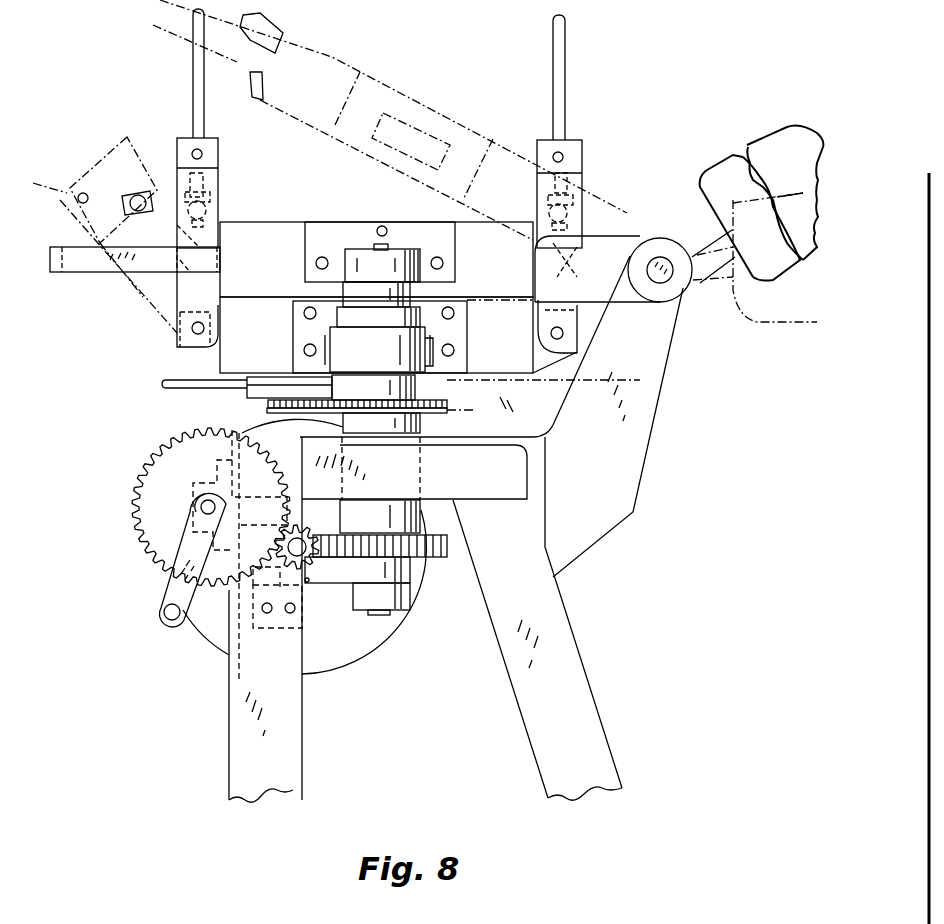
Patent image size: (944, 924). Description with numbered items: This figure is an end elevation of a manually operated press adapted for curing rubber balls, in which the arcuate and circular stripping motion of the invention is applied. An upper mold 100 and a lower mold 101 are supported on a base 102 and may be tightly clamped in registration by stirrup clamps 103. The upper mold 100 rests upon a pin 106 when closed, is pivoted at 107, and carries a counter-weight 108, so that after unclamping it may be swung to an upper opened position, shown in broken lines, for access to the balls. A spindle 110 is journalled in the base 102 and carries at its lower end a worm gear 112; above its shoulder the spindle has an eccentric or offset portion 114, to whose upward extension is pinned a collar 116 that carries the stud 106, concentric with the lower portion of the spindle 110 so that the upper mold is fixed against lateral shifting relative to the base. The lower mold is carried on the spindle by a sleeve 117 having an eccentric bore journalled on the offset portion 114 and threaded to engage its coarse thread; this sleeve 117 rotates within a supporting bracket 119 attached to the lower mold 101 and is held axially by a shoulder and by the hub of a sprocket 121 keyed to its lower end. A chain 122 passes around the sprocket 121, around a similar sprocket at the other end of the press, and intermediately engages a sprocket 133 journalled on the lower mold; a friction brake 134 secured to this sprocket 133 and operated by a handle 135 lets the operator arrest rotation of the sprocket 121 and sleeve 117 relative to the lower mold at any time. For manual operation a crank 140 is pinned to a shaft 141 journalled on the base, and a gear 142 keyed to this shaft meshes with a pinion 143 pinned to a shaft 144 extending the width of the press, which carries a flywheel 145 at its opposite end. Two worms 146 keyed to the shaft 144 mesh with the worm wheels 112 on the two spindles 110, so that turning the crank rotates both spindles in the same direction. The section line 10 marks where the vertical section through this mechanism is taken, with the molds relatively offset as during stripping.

The section line 10- 10 is at (380, 190).
The upper mold 100 is at (342, 67).
The lower mold 101 is at (430, 338).
The base 102 is at (456, 529).
The stirrup clamps 103 is at (177, 173).
The pin 106 is at (376, 247).
The pivot 107 is at (663, 288).
The counter-weight 108 is at (768, 145).
The spindle 110 is at (390, 615).
The worm gear 112 is at (418, 547).
The eccentric or offset portion 114 is at (375, 417).
The collar 116 is at (410, 292).
The sleeve 117 is at (358, 318).
The supporting bracket 119 is at (433, 340).
The sprocket 121 is at (433, 393).
The chain 122 is at (380, 400).
The sprocket 133 is at (270, 409).
The friction brake 134 is at (253, 388).
The handle 135 is at (187, 388).
The crank 140 is at (167, 597).
The shaft 141 is at (208, 500).
The gear 142 is at (143, 517).
The pinion 143 is at (290, 570).
The shaft 144 is at (299, 537).
The flywheel 145 is at (328, 667).
The worms 146 is at (323, 535).